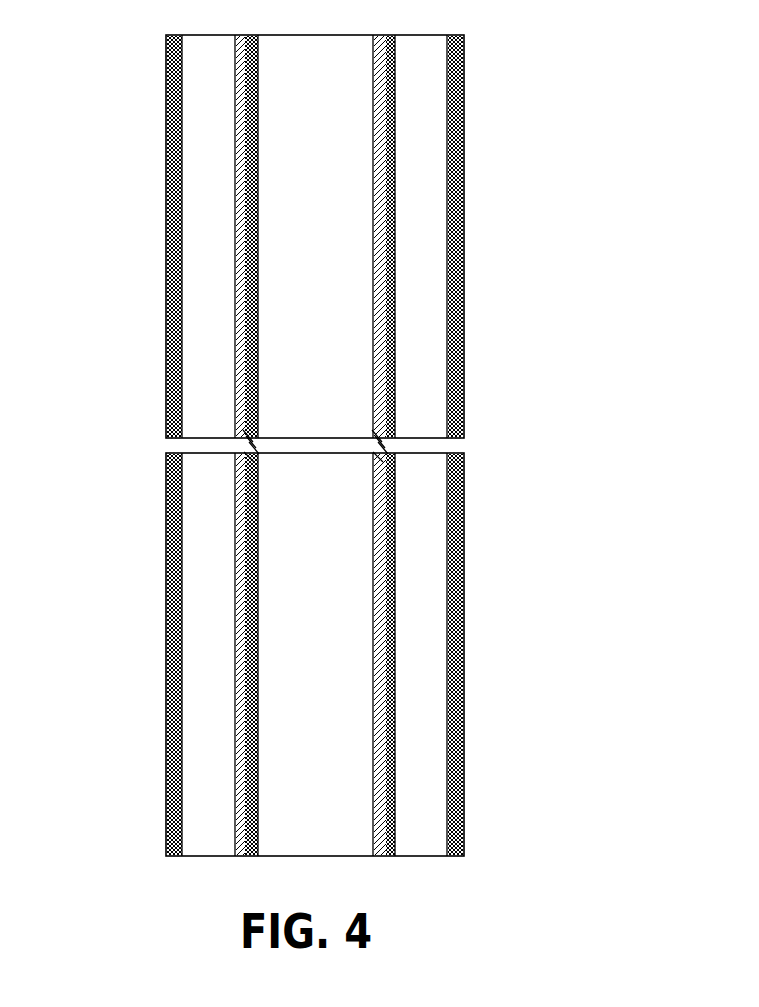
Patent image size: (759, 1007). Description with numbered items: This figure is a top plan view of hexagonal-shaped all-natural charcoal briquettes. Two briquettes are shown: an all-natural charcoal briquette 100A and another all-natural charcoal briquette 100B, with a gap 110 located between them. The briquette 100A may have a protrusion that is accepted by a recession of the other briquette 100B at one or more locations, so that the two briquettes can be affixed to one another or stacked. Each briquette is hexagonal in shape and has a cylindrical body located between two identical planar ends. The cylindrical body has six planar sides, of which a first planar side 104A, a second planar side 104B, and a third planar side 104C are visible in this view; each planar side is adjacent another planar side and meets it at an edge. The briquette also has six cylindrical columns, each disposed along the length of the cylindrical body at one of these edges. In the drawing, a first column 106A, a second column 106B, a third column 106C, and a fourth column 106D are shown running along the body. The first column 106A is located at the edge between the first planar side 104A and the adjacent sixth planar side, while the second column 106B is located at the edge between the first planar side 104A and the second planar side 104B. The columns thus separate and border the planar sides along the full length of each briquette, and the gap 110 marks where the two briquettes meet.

The all-natural charcoal briquette 100A is at (593, 48).
The other all-natural charcoal briquette 100B is at (593, 483).
The first planar side 104A is at (200, 243).
The second planar side 104B is at (297, 310).
The third planar side 104C is at (425, 372).
The first column 106A is at (166, 174).
The second column 106B is at (236, 120).
The third column 106C is at (386, 105).
The fourth column 106D is at (448, 187).
The gap 110 is at (157, 425).